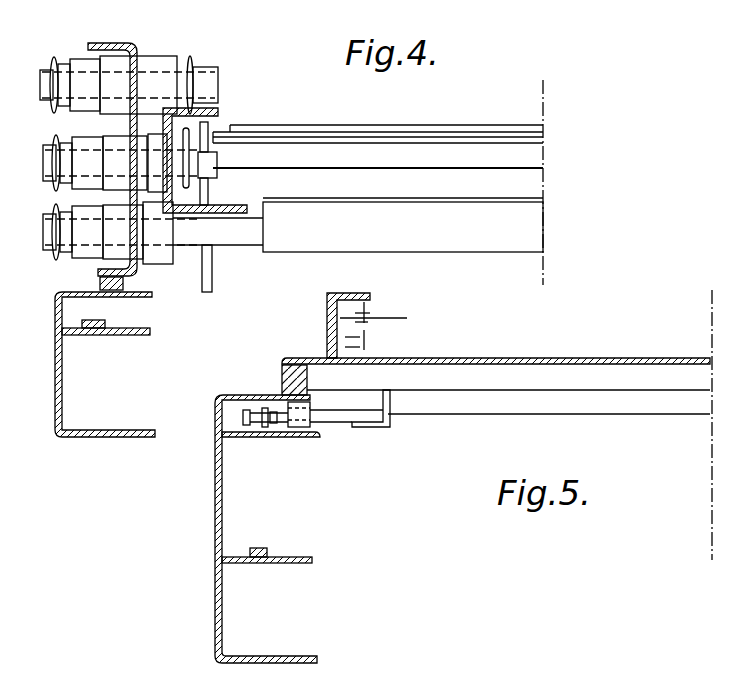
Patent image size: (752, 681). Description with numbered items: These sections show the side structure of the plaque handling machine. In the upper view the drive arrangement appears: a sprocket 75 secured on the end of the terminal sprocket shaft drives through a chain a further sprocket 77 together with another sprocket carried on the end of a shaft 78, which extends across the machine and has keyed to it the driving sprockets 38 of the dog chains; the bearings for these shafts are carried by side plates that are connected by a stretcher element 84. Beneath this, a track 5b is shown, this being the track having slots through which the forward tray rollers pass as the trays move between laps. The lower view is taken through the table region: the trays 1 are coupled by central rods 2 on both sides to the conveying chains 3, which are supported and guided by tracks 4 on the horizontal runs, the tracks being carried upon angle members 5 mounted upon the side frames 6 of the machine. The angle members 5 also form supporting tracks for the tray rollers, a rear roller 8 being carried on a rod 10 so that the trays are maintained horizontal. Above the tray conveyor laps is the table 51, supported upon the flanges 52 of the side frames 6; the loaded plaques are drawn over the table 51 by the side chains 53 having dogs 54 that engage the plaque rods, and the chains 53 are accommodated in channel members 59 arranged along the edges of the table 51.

In FIG. 5, the tray 1 is at (543, 405).
In FIG. 5, the central rod 2 is at (283, 408).
In FIG. 5, the conveying chain 3 is at (243, 416).
In FIG. 5, the track 4 is at (259, 438).
In FIG. 5, the angle member 5 is at (291, 437).
In FIG. 5, the side frame 6 is at (218, 507).
In FIG. 5, the rear roller 8 is at (308, 405).
In FIG. 5, the rod 10 is at (352, 413).
In FIG. 4, the driving sprocket 38 is at (190, 133).
In FIG. 5, the table 51 is at (518, 357).
In FIG. 5, the flange 52 is at (238, 394).
In FIG. 5, the side chain 53 is at (394, 318).
In FIG. 5, the dog 54 is at (368, 305).
In FIG. 5, the channel member 59 is at (327, 327).
In FIG. 4, the track 5b is at (108, 336).
In FIG. 4, the sprocket 75 is at (55, 65).
In FIG. 4, the sprocket 77 is at (50, 160).
In FIG. 4, the shaft 78 is at (58, 232).
In FIG. 4, the stretcher element 84 is at (133, 50).